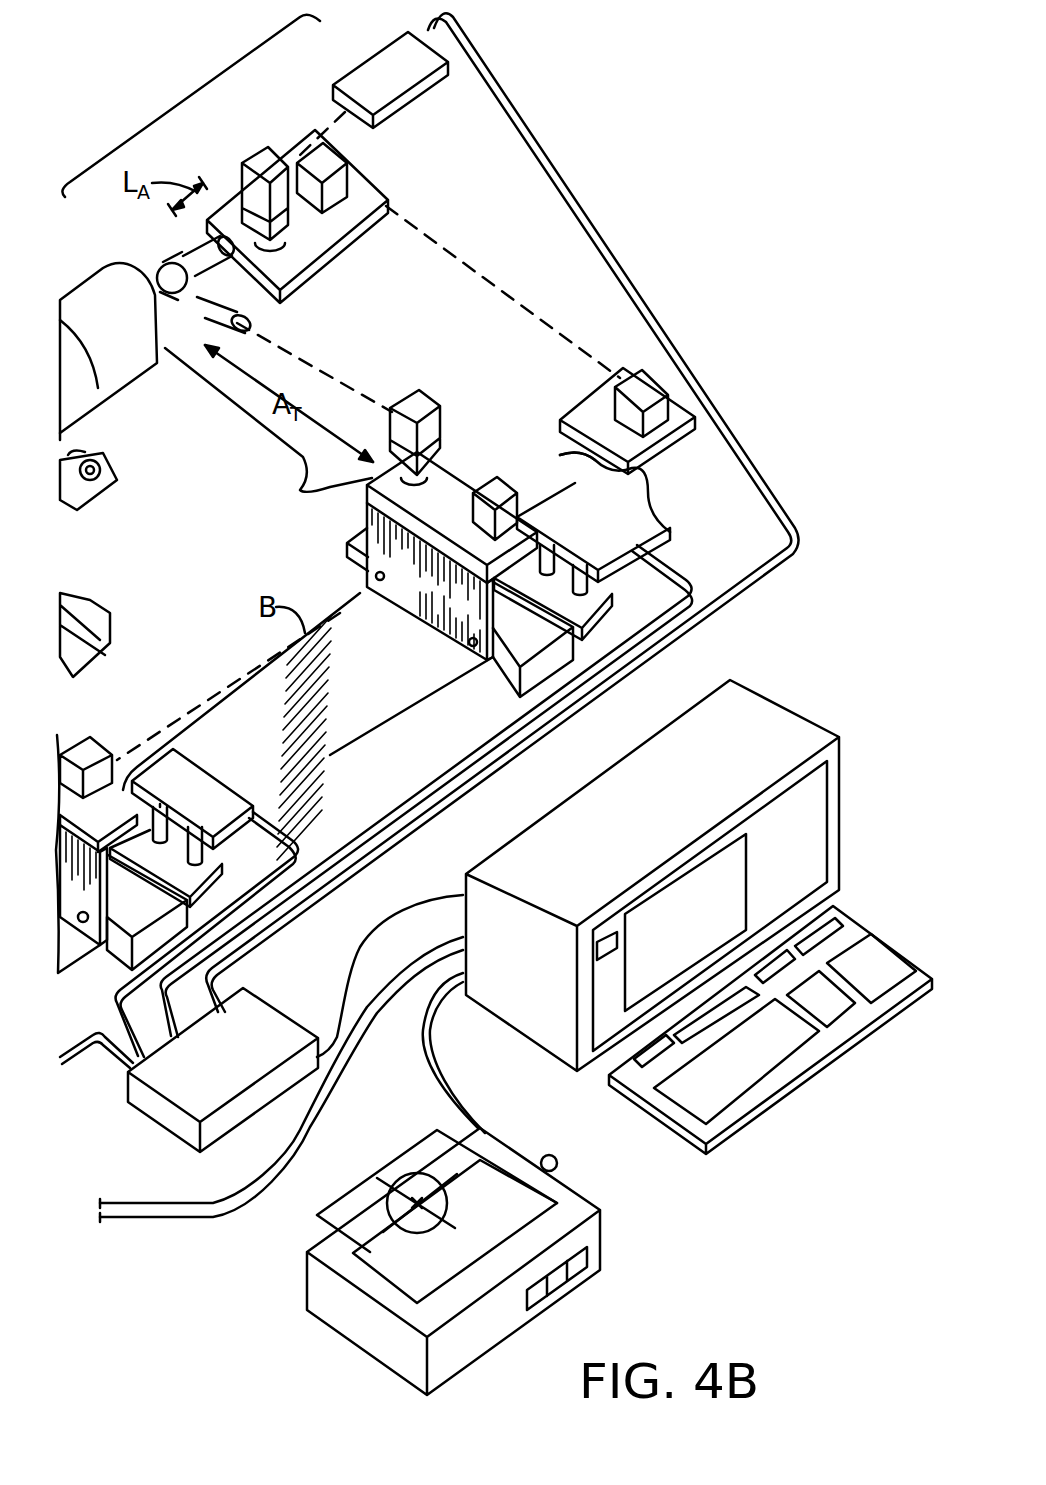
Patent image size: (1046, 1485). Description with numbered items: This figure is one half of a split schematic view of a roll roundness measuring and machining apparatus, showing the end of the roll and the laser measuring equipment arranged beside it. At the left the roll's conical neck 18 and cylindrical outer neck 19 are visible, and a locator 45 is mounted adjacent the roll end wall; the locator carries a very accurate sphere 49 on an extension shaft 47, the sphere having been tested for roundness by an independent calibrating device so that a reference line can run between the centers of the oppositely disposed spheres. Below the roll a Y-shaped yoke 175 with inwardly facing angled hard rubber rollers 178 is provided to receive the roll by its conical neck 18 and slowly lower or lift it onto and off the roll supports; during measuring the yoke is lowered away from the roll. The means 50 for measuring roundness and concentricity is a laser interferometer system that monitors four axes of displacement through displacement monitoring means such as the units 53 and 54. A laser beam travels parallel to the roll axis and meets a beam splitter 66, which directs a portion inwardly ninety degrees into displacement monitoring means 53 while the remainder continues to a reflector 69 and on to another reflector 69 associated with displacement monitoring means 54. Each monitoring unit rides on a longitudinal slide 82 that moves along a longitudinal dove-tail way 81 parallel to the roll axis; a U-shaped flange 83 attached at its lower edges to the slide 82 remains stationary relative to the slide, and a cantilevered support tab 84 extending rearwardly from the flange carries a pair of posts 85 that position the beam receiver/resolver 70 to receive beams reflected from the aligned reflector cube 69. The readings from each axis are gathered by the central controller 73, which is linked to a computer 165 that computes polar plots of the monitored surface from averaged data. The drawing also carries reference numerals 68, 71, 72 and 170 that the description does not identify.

The conical neck 18 is at (82, 410).
The outer neck 19 is at (110, 330).
The locator 45 is at (150, 268).
The extension shaft 47 is at (157, 327).
The sphere 49 is at (170, 265).
The means for measuring roundness and concentricity 50 is at (785, 492).
The displacement monitoring means 53 is at (298, 490).
The displacement monitoring means 54 is at (160, 118).
The beam splitter 66 is at (496, 490).
The mounting plate 68 is at (286, 223).
The reflector 69 is at (262, 157).
The beam receiver/resolver 70 is at (408, 78).
The cable 71 is at (596, 243).
The lens 72 is at (280, 248).
The central controller 73 is at (240, 1067).
The longitudinal dove-tail way 81 is at (648, 520).
The longitudinal slide 82 is at (535, 690).
The U-shaped flange 83 is at (372, 487).
The cantilevered support tab 84 is at (609, 603).
The post 85 is at (165, 818).
The computer 165 is at (773, 696).
The printer 170 is at (488, 1348).
The Y-shaped yoke 175 is at (110, 467).
The angled hard rubber roller 178 is at (68, 453).